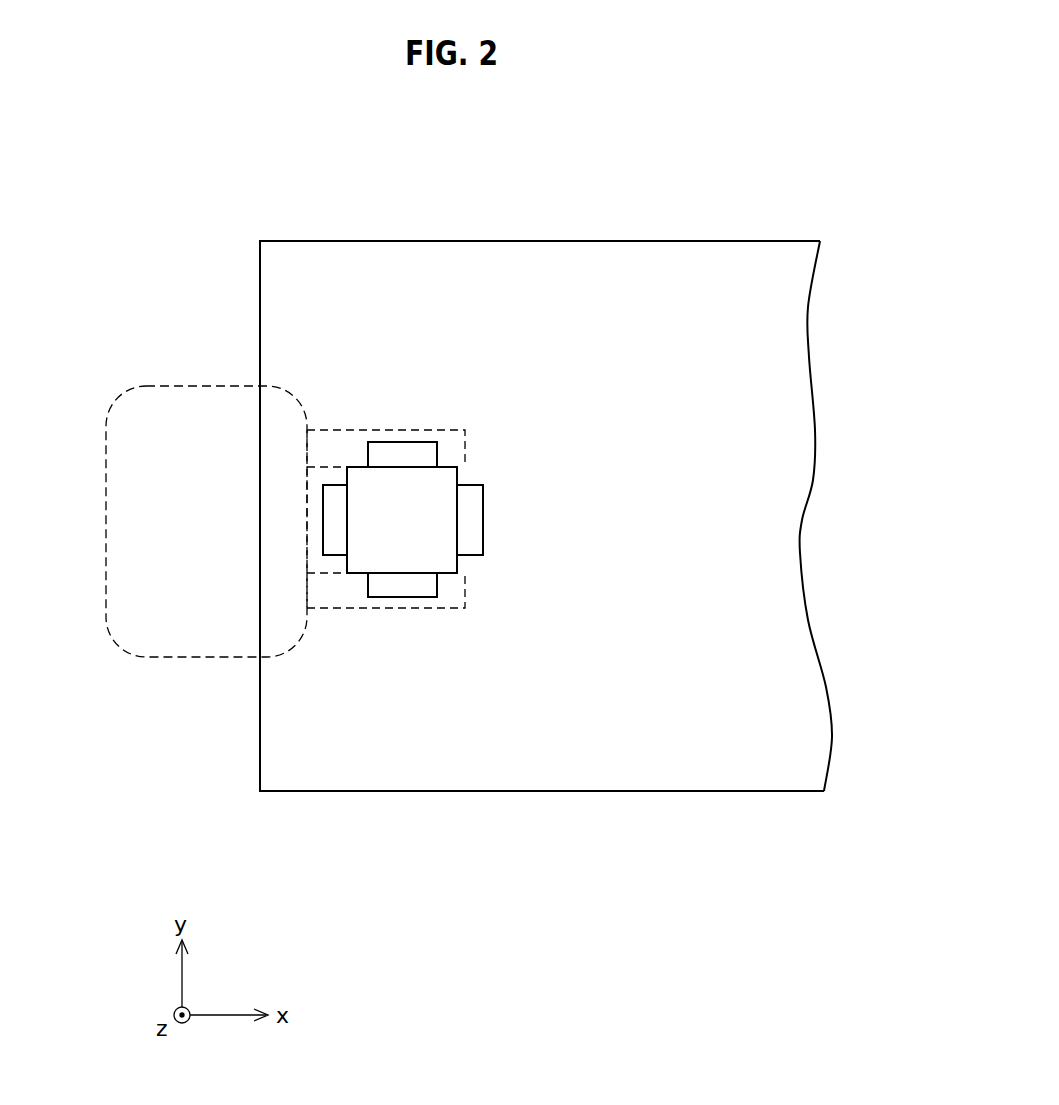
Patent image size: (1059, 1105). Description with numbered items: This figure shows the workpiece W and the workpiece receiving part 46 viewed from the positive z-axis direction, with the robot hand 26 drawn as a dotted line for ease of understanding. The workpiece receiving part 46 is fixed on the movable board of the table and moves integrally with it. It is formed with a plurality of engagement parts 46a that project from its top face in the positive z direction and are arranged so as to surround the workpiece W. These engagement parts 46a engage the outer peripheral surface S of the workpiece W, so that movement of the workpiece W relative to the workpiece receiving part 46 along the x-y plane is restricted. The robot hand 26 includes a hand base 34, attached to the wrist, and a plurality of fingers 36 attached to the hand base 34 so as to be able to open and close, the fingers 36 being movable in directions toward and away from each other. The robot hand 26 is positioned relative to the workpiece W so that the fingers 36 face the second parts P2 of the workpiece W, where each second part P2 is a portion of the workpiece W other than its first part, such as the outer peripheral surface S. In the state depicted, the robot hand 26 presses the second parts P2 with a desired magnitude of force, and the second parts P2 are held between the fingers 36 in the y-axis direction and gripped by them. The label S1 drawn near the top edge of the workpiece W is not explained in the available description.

The robot hand 26 is at (195, 502).
The hand base 34 is at (170, 643).
The fingers 36 is at (345, 428).
The workpiece receiving part 46 is at (680, 792).
The engagement parts 46a is at (412, 452).
The workpiece W is at (445, 470).
The first side of workpiece S1 is at (458, 472).
The outer peripheral surface S is at (460, 538).
The second part P2 is at (356, 466).